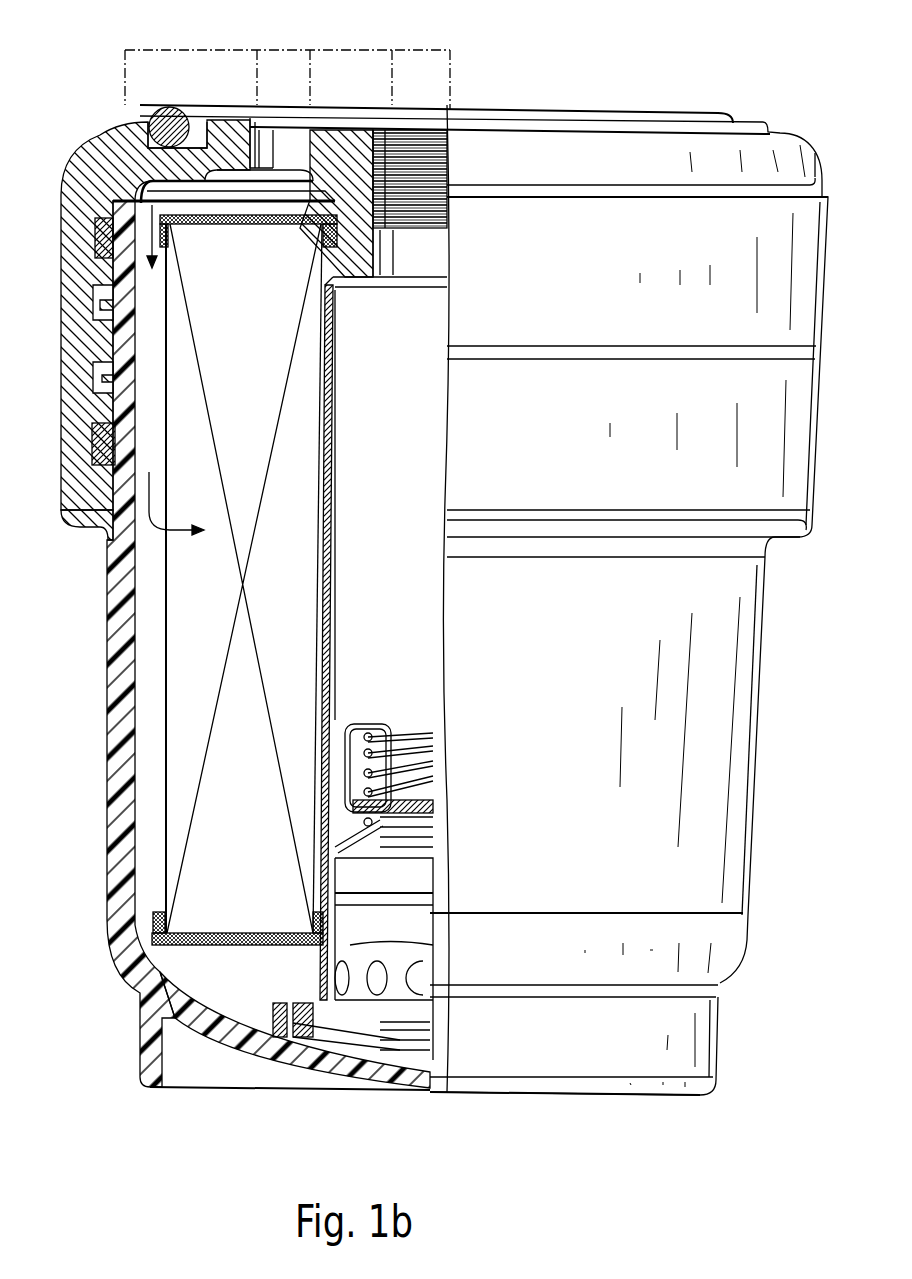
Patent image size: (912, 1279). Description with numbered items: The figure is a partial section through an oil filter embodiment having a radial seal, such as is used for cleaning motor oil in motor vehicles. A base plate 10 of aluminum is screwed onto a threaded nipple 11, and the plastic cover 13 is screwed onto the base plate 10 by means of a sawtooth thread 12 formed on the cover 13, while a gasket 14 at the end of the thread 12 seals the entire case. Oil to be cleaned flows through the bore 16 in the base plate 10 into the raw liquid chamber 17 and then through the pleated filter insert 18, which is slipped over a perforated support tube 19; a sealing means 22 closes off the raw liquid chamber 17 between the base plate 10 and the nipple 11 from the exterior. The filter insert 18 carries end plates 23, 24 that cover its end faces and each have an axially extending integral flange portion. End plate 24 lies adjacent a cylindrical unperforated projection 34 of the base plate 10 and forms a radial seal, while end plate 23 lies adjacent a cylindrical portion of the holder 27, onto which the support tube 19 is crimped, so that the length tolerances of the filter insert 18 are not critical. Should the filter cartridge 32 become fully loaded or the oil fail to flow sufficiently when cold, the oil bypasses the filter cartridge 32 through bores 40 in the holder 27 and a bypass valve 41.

The base plate 10 is at (80, 218).
The threaded nipple 11 is at (125, 62).
The sawtooth thread 12 is at (100, 378).
The cover 13 is at (120, 688).
The gasket 14 is at (100, 445).
The bore 16 is at (270, 135).
The raw liquid chamber 17 is at (150, 315).
The filter insert 18 is at (166, 645).
The support tube 19 is at (332, 520).
The sealing means 22 is at (142, 123).
The end plate 23 is at (245, 933).
The end plate 24 is at (243, 228).
The holder 27 is at (405, 875).
The filter cartridge 32 is at (158, 748).
The projection 34 is at (358, 280).
The bores 40 is at (425, 977).
The bypass valve 41 is at (388, 712).